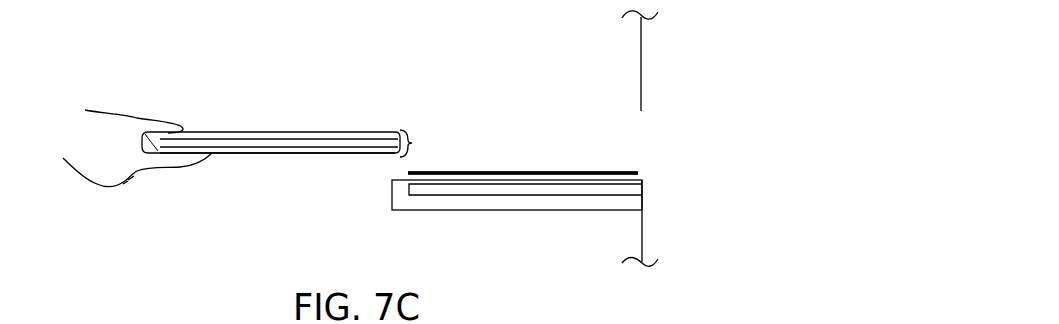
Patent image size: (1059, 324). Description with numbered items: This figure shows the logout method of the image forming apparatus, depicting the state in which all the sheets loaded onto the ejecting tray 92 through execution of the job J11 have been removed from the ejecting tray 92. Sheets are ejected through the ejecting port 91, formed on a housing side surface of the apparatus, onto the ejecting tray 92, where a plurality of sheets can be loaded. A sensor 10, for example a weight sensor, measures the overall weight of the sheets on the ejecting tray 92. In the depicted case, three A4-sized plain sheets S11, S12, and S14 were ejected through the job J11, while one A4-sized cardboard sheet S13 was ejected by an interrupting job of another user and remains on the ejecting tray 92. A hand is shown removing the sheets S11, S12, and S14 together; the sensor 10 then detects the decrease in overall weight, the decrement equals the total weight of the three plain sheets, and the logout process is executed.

The sheet S14 is at (254, 132).
The sheet S12 is at (289, 139).
The sheet S11 is at (334, 154).
The job J11 is at (425, 141).
The sheet S13 is at (581, 172).
The sensor 10 is at (557, 187).
The ejecting port 91 is at (652, 140).
The ejecting tray 92 is at (427, 211).